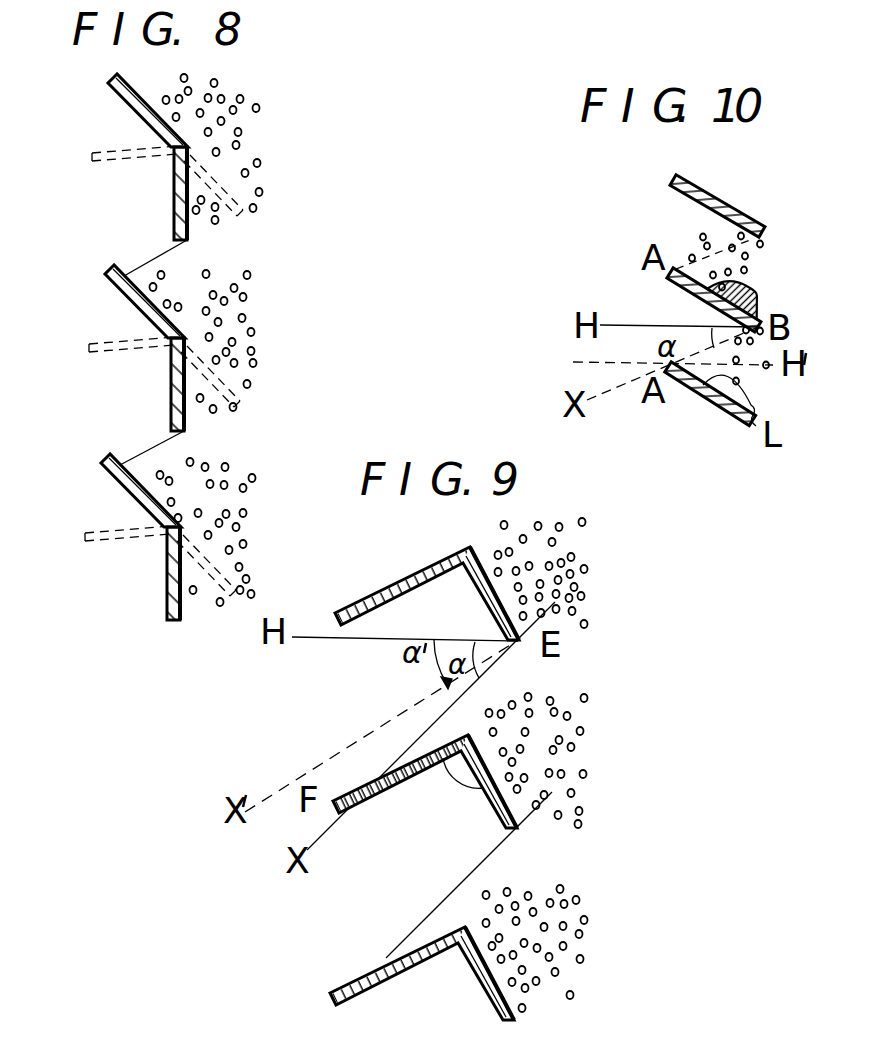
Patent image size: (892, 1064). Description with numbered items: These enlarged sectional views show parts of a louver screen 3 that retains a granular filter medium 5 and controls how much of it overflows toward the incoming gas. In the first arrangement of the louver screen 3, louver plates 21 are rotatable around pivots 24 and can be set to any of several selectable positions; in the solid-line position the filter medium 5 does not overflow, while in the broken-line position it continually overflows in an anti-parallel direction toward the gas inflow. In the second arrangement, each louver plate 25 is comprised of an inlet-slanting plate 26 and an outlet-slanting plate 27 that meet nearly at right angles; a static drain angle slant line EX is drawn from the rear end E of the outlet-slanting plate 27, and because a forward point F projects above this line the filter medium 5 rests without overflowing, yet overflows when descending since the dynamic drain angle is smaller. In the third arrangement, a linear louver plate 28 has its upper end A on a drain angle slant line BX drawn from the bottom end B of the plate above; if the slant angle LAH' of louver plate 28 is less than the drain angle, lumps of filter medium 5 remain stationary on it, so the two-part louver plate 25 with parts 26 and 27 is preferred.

In FIG. 8, the louver assembly 3 is at (74, 192).
In FIG. 9, the louver assembly 3 is at (236, 887).
In FIG. 8, the filter medium 5 is at (220, 328).
In FIG. 9, the filter medium 5 is at (533, 880).
In FIG. 8, the louver plate 21 is at (147, 317).
In FIG. 8, the pivot 24 is at (171, 348).
In FIG. 9, the louver plate 25 is at (327, 748).
In FIG. 9, the inlet-slanting plate 26 is at (400, 763).
In FIG. 9, the outlet-slanting plate 27 is at (442, 743).
In FIG. 10, the louver plate 28 is at (733, 410).